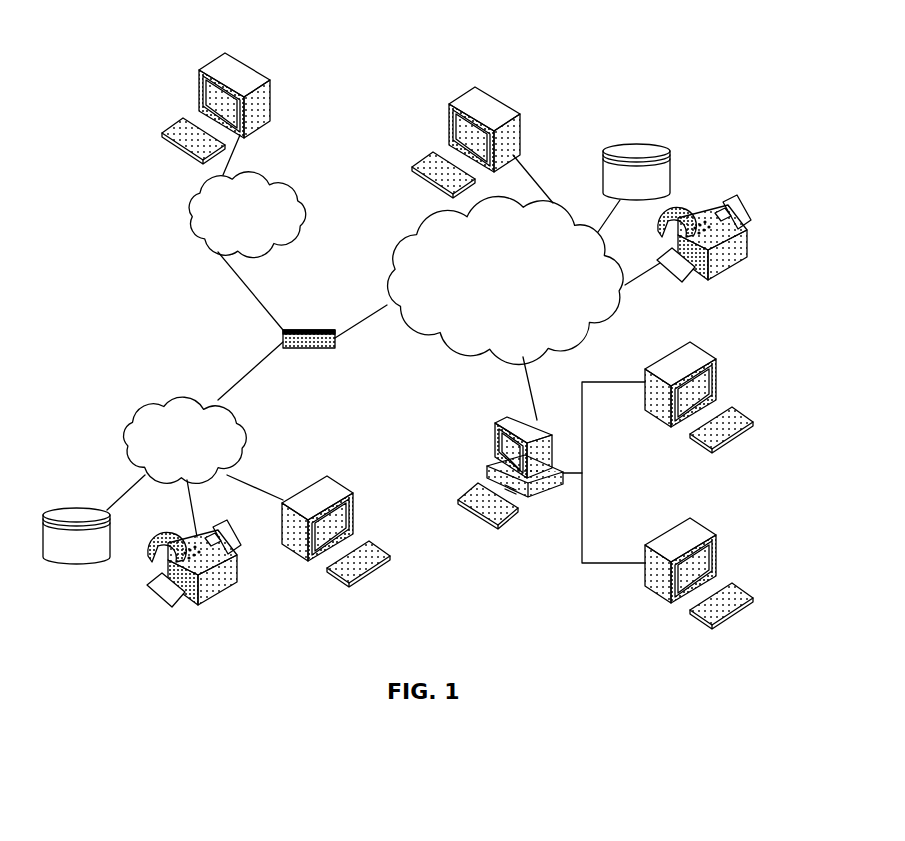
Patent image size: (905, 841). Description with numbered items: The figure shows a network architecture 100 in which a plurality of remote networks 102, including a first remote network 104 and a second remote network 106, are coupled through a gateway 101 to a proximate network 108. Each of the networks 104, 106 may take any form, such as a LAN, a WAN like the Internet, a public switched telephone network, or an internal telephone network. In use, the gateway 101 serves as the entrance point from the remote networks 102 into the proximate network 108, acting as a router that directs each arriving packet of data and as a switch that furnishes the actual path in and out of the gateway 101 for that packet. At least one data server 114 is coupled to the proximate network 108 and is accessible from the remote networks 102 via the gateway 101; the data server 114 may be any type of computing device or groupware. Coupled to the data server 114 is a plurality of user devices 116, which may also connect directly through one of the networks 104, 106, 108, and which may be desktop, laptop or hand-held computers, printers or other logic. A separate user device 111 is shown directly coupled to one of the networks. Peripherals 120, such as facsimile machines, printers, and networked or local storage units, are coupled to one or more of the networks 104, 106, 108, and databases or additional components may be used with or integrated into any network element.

The architecture 100 is at (140, 37).
The gateway 101 is at (297, 329).
The remote networks 102 is at (165, 268).
The first remote network 104 is at (125, 422).
The second remote network 106 is at (303, 193).
The proximate network 108 is at (593, 332).
The user device 111 is at (518, 115).
The data server 114 is at (495, 432).
The user devices 116 is at (270, 85).
The peripheral 120 is at (670, 153).